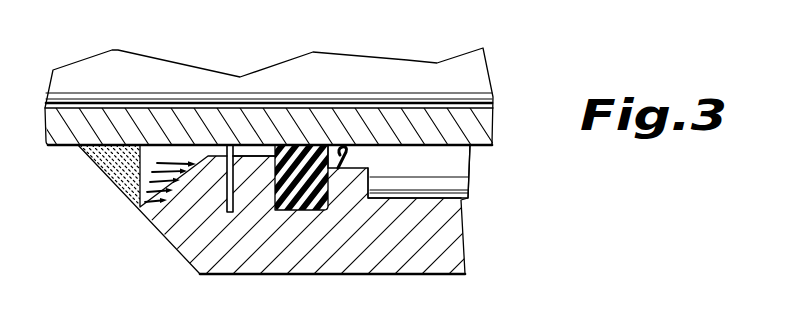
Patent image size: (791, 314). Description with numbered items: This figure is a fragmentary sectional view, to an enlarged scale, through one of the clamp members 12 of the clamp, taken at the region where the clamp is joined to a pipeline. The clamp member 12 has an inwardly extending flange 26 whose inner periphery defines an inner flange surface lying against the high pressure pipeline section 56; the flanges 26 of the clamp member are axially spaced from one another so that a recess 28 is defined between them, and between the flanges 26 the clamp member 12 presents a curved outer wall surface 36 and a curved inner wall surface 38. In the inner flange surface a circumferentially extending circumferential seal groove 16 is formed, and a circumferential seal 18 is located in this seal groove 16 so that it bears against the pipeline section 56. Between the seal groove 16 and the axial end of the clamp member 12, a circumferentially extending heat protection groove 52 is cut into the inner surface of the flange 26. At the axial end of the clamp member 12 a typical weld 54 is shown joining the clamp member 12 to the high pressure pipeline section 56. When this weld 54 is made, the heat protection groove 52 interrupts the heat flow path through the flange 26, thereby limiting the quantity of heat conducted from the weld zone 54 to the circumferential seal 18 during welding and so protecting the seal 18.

The clamp member 12 is at (170, 260).
The circumferential seal groove 16 is at (305, 213).
The circumferential seal 18 is at (336, 147).
The inwardly extending flange 26 is at (262, 150).
The recess 28 is at (427, 157).
The curved outer wall surface 36 is at (335, 275).
The curved inner wall surface 38 is at (448, 193).
The heat protection groove 52 is at (227, 168).
The weld 54 is at (110, 173).
The high pressure pipeline section 56 is at (110, 118).